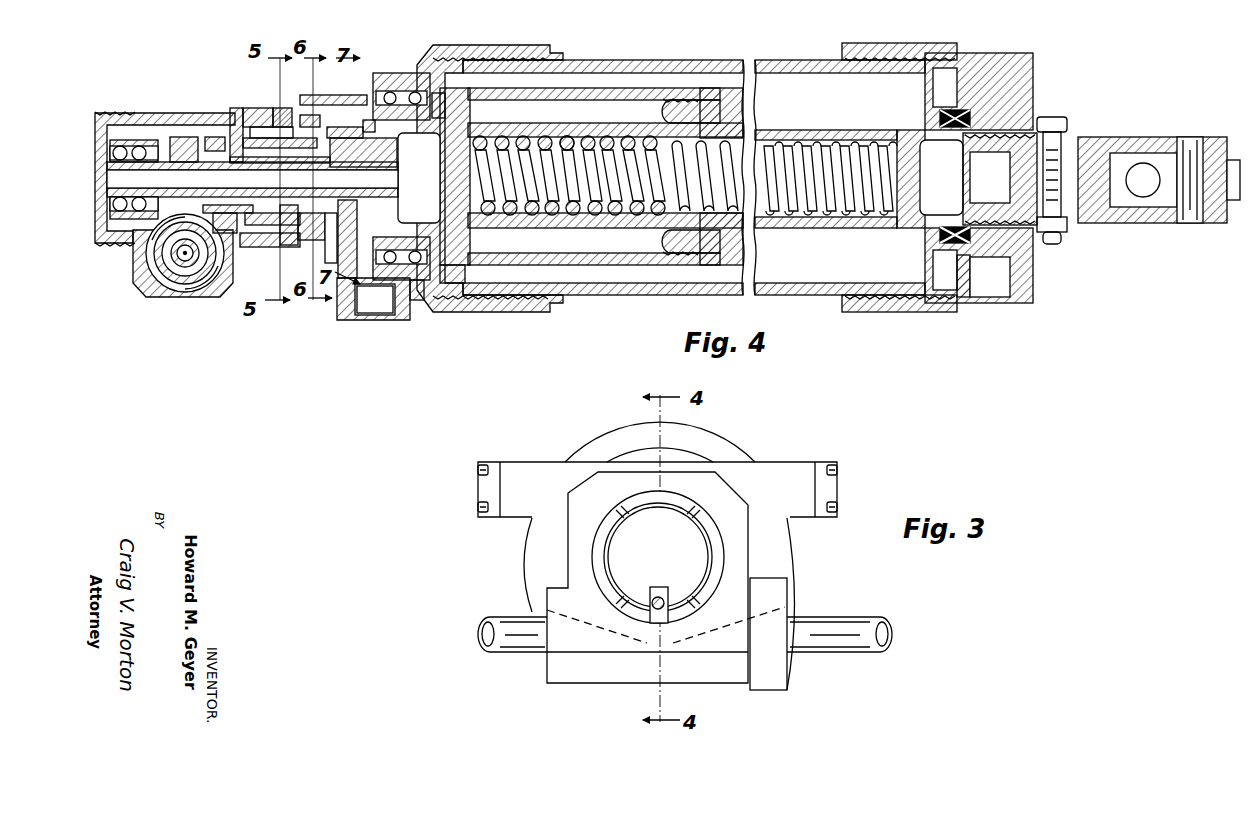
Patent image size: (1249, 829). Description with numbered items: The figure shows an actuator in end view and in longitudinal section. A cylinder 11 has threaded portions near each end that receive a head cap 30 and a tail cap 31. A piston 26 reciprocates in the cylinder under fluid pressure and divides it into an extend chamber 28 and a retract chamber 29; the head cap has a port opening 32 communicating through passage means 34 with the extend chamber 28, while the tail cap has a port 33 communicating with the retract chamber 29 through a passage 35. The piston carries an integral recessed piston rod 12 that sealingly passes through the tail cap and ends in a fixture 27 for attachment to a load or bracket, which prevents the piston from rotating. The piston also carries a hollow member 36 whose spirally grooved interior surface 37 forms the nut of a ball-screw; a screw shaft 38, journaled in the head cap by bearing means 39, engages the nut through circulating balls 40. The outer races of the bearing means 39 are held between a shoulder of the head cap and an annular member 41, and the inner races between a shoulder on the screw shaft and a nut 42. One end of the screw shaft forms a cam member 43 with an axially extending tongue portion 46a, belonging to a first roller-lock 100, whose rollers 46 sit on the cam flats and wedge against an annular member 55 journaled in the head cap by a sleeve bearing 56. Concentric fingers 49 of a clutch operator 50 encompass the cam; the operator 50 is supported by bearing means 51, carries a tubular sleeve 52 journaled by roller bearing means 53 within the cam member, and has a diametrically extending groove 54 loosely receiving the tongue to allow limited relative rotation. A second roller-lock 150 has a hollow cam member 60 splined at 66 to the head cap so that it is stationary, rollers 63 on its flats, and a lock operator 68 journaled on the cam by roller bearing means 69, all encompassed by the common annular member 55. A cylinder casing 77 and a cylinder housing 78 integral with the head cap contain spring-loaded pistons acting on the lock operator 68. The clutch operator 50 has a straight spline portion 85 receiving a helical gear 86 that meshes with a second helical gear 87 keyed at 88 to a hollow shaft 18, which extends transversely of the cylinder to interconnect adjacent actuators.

In FIG. 4, the cylinder 11 is at (690, 62).
In FIG. 4, the piston rod 12 is at (905, 222).
In FIG. 4, the hollow shaft 18 is at (180, 258).
In FIG. 3, the hollow shaft 18 is at (838, 636).
In FIG. 4, the piston 26 is at (690, 247).
In FIG. 4, the fixture 27 is at (1096, 208).
In FIG. 4, the extend chamber 28 is at (545, 246).
In FIG. 4, the retract chamber 29 is at (941, 70).
In FIG. 4, the head cap 30 is at (455, 52).
In FIG. 3, the head cap 30 is at (605, 447).
In FIG. 4, the tail cap 31 is at (984, 72).
In FIG. 4, the port opening 32 is at (372, 313).
In FIG. 4, the port 33 is at (1000, 292).
In FIG. 4, the passage means 34 is at (413, 300).
In FIG. 4, the passage 35 is at (963, 300).
In FIG. 4, the hollow member 36 is at (625, 230).
In FIG. 4, the spirally grooved interior surface 37 is at (605, 148).
In FIG. 4, the screw shaft 38 is at (795, 155).
In FIG. 4, the bearing means 39 is at (405, 73).
In FIG. 4, the circulating balls 40 is at (572, 143).
In FIG. 4, the annular member 41 is at (447, 284).
In FIG. 4, the nut 42 is at (455, 100).
In FIG. 4, the cam member 43 is at (342, 300).
In FIG. 4, the roller 46 is at (352, 279).
In FIG. 4, the tongue portion 46a is at (330, 264).
In FIG. 4, the fingers 49 is at (366, 122).
In FIG. 4, the clutch operator 50 is at (342, 127).
In FIG. 4, the bearing means 51 is at (122, 146).
In FIG. 4, the tubular sleeve 52 is at (270, 227).
In FIG. 4, the roller bearing means 53 is at (419, 178).
In FIG. 4, the groove 54 is at (258, 108).
In FIG. 4, the annular member 55 is at (283, 108).
In FIG. 4, the sleeve bearing 56 is at (330, 95).
In FIG. 4, the hollow cam member 60 is at (236, 130).
In FIG. 4, the roller 63 is at (270, 248).
In FIG. 4, the splined connection 66 is at (258, 127).
In FIG. 4, the lock operator 68 is at (215, 137).
In FIG. 4, the roller bearing means 69 is at (230, 234).
In FIG. 3, the cylinder casing 77 is at (521, 483).
In FIG. 3, the cylinder housing 78 is at (797, 483).
In FIG. 4, the straight spline portion 85 is at (133, 245).
In FIG. 4, the helical gear 86 is at (180, 137).
In FIG. 4, the second helical gear 87 is at (178, 268).
In FIG. 4, the key 88 is at (190, 263).
In FIG. 4, the first roller-lock 100 is at (318, 242).
In FIG. 4, the second roller-lock 150 is at (290, 246).